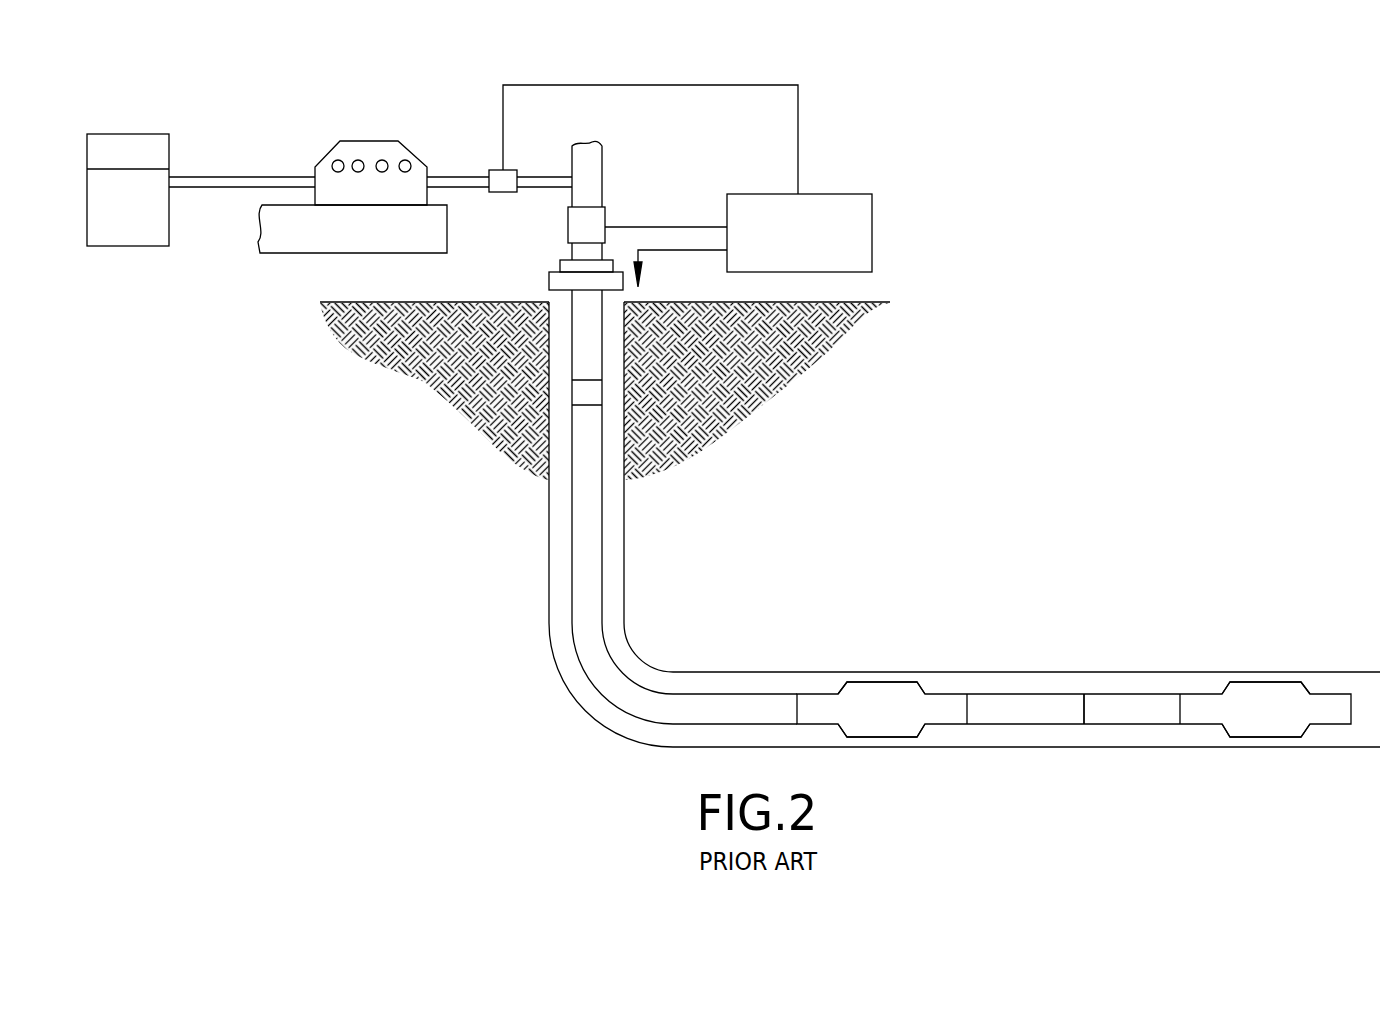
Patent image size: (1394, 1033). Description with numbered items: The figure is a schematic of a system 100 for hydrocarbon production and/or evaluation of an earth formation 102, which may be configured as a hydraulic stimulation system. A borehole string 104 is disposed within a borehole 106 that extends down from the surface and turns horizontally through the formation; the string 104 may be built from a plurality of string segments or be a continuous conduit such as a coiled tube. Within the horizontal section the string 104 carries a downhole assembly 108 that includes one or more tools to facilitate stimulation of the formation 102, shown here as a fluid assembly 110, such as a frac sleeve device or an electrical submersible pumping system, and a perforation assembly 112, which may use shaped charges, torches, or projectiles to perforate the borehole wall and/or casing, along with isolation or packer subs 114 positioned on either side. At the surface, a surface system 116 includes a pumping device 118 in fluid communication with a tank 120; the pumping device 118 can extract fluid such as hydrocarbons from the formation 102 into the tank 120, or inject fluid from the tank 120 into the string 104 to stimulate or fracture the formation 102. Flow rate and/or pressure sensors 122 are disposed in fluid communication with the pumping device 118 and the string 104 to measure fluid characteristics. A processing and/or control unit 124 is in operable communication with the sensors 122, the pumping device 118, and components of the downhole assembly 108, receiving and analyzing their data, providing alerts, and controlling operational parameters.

The system 100 is at (1105, 250).
The earth formation 102 is at (452, 415).
The borehole string 104 is at (585, 549).
The borehole 106 is at (560, 640).
The downhole assembly 108 is at (1074, 673).
The fluid assembly 110 is at (1008, 713).
The perforation assembly 112 is at (1115, 702).
The isolation or packer subs 114 is at (867, 698).
The surface system 116 is at (300, 103).
The pumping device 118 is at (393, 150).
The tank 120 is at (127, 223).
The flow rate and/or pressure sensors 122 is at (575, 225).
The processing and/or control unit 124 is at (776, 241).